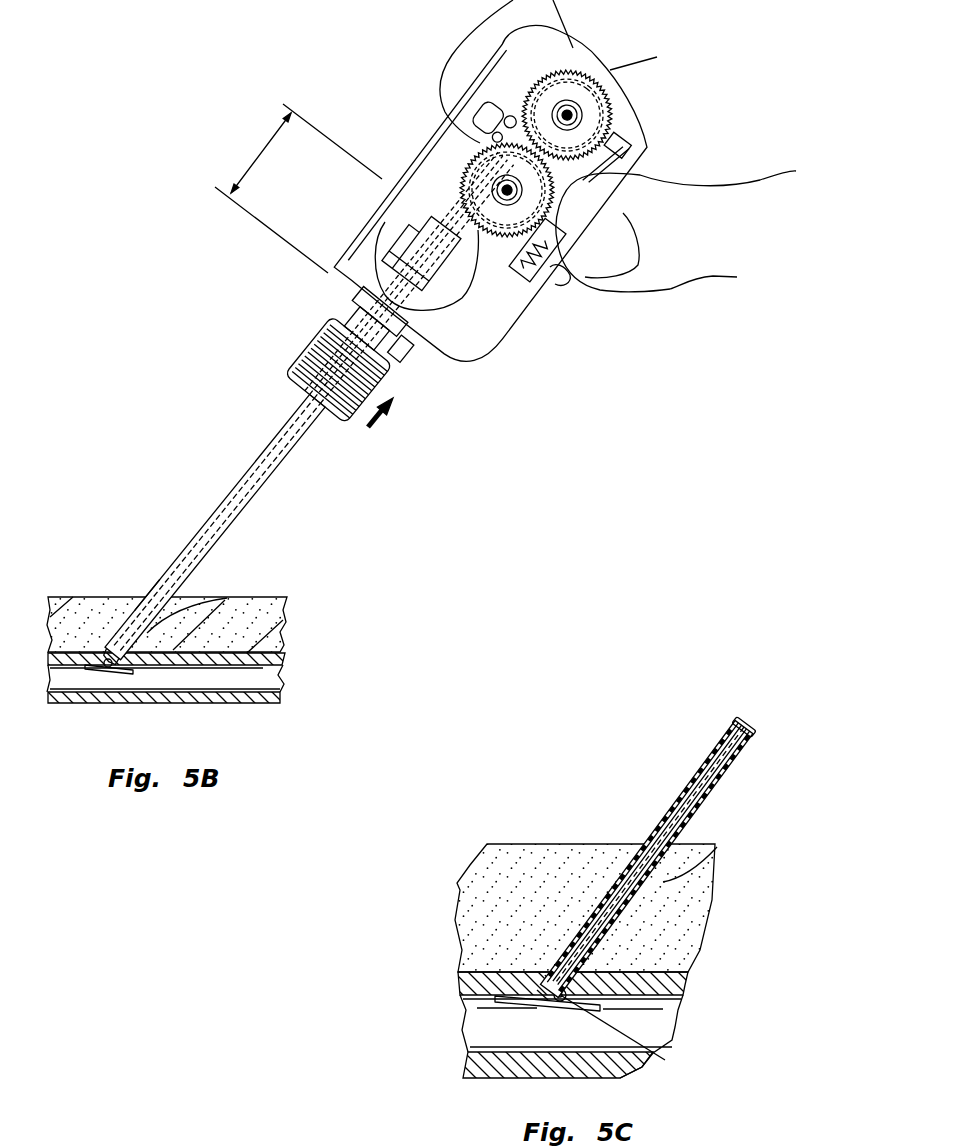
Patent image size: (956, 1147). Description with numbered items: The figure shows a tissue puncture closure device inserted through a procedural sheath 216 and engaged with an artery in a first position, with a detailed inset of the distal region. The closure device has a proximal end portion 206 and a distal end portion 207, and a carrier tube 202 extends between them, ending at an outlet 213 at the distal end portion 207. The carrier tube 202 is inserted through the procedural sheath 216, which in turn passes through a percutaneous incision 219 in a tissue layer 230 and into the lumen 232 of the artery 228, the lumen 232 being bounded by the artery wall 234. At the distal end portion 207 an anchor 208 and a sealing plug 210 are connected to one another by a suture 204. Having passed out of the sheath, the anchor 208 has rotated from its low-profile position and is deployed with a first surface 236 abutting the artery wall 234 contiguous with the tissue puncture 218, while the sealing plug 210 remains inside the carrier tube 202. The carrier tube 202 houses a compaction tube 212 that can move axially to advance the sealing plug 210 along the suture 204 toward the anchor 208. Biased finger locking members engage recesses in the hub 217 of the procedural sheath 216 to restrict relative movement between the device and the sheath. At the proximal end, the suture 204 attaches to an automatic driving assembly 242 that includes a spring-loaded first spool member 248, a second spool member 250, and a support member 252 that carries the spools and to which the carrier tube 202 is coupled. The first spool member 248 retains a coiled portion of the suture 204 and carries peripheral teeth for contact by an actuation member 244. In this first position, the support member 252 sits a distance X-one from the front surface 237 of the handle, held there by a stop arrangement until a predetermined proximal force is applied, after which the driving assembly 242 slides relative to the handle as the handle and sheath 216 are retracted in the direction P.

In FIG. 5C, the carrier tube 202 is at (747, 757).
In FIG. 5C, the suture 204 is at (752, 727).
In FIG. 5B, the proximal end portion 206 is at (377, 335).
In FIG. 5B, the distal end portion 207 is at (142, 582).
In FIG. 5B, the anchor 208 is at (122, 668).
In FIG. 5C, the anchor 208 is at (510, 1005).
In FIG. 5B, the sealing plug 210 is at (115, 652).
In FIG. 5C, the sealing plug 210 is at (560, 952).
In FIG. 5B, the compaction tube 212 is at (458, 162).
In FIG. 5C, the compaction tube 212 is at (750, 737).
In FIG. 5C, the outlet 213 is at (545, 975).
In FIG. 5B, the procedural sheath 216 is at (275, 468).
In FIG. 5C, the procedural sheath 216 is at (730, 783).
In FIG. 5B, the hub 217 is at (300, 350).
In FIG. 5B, the tissue puncture 218 is at (98, 652).
In FIG. 5C, the tissue puncture 218 is at (537, 990).
In FIG. 5B, the percutaneous incision 219 is at (212, 597).
In FIG. 5C, the percutaneous incision 219 is at (717, 847).
In FIG. 5B, the artery 228 is at (261, 662).
In FIG. 5C, the artery 228 is at (680, 997).
In FIG. 5B, the tissue layer 230 is at (265, 598).
In FIG. 5C, the tissue layer 230 is at (703, 880).
In FIG. 5B, the lumen 232 is at (257, 688).
In FIG. 5C, the lumen 232 is at (655, 1032).
In FIG. 5B, the artery wall 234 is at (184, 662).
In FIG. 5C, the artery wall 234 is at (677, 987).
In FIG. 5C, the first surface 236 is at (665, 1060).
In FIG. 5B, the front surface 237 is at (443, 368).
In FIG. 5B, the automatic driving assembly 242 is at (455, 150).
In FIG. 5B, the actuation member 244 is at (597, 167).
In FIG. 5B, the first spool member 248 is at (567, 67).
In FIG. 5B, the second spool member 250 is at (490, 237).
In FIG. 5B, the support member 252 is at (420, 214).